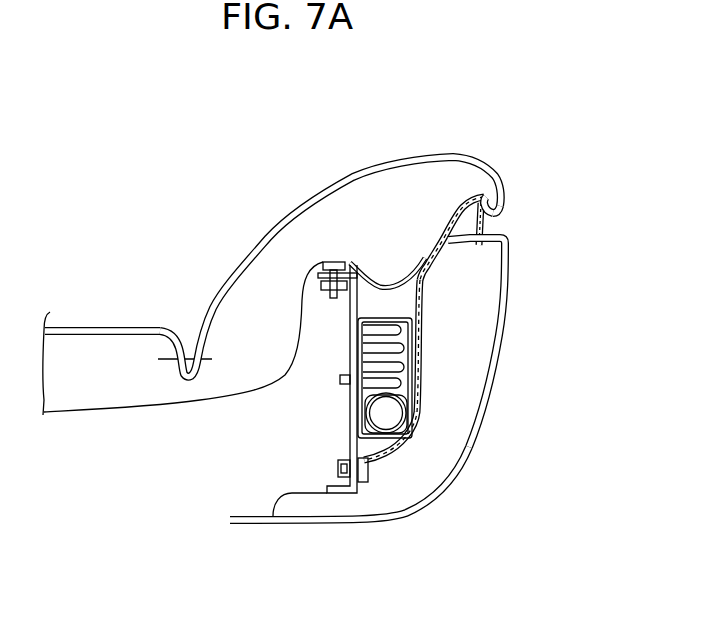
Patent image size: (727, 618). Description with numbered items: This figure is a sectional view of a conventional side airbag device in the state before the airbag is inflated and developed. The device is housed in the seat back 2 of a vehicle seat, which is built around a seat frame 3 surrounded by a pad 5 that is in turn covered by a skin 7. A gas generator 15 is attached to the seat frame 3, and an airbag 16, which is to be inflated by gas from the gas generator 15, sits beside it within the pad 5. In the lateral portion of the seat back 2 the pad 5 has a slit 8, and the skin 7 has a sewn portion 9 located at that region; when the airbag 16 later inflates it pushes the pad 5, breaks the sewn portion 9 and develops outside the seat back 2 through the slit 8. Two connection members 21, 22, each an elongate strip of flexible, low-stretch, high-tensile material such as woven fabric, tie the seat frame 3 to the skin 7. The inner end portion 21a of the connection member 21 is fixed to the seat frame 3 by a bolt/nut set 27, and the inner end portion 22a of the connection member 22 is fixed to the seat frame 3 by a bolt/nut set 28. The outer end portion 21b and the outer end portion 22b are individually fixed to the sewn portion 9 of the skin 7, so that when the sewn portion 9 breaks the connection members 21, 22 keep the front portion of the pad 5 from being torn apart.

The seat back 2 is at (160, 209).
The seat frame 3 is at (350, 415).
The pad 5 is at (93, 367).
The skin 7 is at (118, 327).
The slit 8 is at (455, 237).
The sewn portion 9 is at (503, 187).
The gas generator 15 is at (393, 415).
The airbag 16 is at (403, 341).
The connection member 21 is at (442, 209).
The inner end portion 21a is at (358, 262).
The outer end portion 21b is at (507, 193).
The connection member 22 is at (400, 443).
The inner end portion 22a is at (370, 460).
The outer end portion 22b is at (508, 238).
The bolt/nut set 27 is at (333, 264).
The bolt/nut set 28 is at (338, 467).